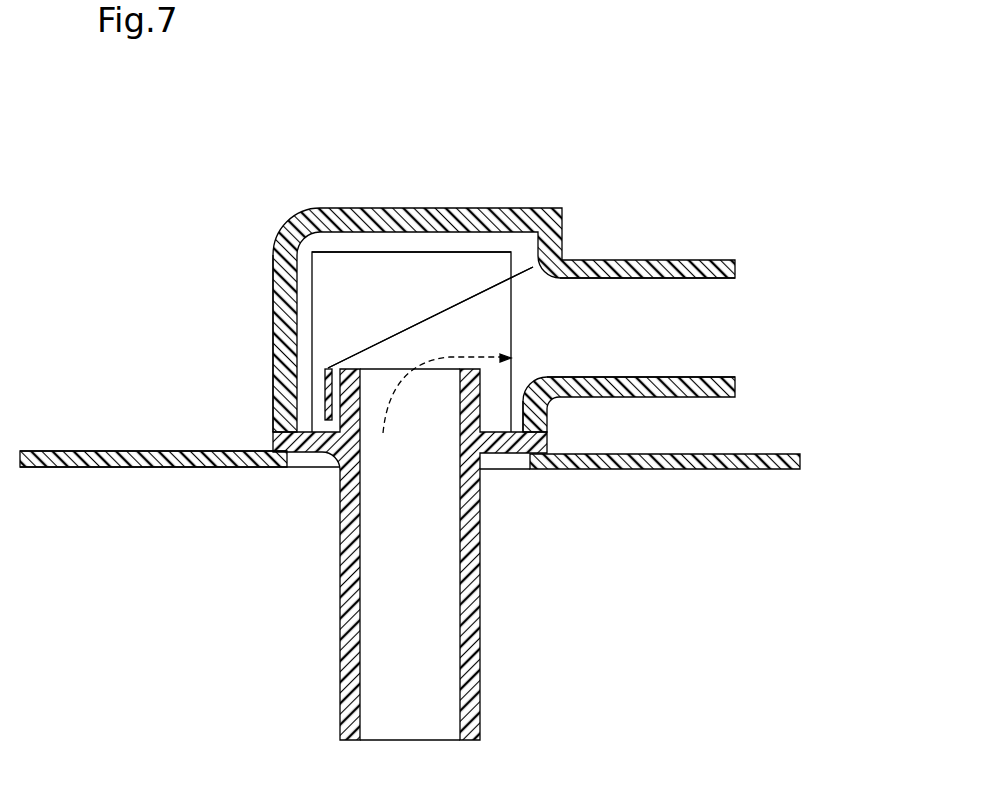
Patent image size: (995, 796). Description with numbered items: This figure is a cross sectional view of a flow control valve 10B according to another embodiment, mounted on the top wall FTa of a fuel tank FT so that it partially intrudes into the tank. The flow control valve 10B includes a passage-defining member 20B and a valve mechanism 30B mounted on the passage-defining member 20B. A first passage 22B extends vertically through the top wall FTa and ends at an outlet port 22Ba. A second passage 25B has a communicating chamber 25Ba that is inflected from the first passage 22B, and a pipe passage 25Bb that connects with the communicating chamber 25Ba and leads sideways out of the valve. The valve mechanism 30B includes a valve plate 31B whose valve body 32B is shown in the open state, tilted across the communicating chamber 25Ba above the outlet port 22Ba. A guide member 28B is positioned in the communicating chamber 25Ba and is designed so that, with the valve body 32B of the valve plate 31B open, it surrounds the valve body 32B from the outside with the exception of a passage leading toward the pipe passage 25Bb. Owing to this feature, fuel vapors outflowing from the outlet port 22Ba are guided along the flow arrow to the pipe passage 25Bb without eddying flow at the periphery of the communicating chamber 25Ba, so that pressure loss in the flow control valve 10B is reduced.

The flow control valve 10B is at (153, 240).
The passage-defining member 20B is at (273, 307).
The valve mechanism 30B is at (382, 348).
The valve body 32B is at (423, 323).
The valve plate 31B is at (430, 317).
The guide member 28B is at (405, 250).
The second passage 25B is at (540, 303).
The communicating chamber 25Ba is at (511, 348).
The pipe passage 25Bb is at (682, 337).
The first passage 22B is at (432, 540).
The outlet port 22Ba is at (438, 377).
The fuel tank FT is at (80, 452).
The top wall FTa is at (153, 459).